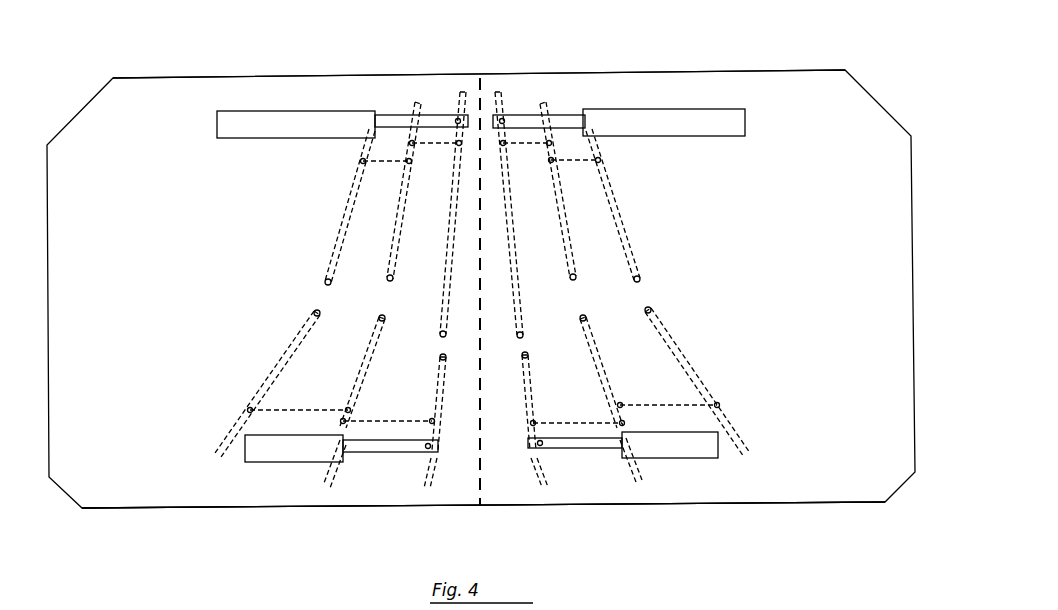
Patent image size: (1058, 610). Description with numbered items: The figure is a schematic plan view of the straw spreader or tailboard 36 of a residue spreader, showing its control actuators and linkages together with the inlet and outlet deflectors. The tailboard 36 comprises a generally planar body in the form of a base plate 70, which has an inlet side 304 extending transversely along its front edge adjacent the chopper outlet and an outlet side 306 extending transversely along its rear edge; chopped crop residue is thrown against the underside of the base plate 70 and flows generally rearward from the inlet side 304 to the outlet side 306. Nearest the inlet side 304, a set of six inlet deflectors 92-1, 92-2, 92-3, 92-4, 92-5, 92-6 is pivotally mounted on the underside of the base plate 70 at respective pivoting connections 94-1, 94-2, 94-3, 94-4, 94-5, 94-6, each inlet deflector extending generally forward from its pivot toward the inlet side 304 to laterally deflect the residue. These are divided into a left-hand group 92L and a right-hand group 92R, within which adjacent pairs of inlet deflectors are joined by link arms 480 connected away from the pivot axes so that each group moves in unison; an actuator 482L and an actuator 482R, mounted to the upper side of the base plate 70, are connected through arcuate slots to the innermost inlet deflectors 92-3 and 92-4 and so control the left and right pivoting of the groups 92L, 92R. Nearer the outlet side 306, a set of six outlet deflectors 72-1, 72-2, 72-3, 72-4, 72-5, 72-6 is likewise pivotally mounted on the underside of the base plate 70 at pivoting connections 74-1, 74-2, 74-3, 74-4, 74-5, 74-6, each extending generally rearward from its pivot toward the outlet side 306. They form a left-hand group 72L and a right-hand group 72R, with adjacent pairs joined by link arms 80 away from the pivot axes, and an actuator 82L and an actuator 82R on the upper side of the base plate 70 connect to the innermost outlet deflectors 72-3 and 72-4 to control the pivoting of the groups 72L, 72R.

The straw spreader or tailboard 36 is at (78, 80).
The base plate 70 is at (146, 510).
The inlet side 304 is at (706, 70).
The outlet side 306 is at (256, 510).
The actuator 482L is at (272, 110).
The actuator 482R is at (747, 118).
The link arm 480 is at (383, 165).
The left-hand group of inlet deflectors 92L is at (264, 192).
The right-hand group of inlet deflectors 92R is at (700, 200).
The inlet deflector 92-1 is at (345, 215).
The inlet deflector 92-2 is at (398, 238).
The inlet deflector 92-3 is at (446, 258).
The inlet deflector 92-4 is at (513, 262).
The inlet deflector 92-5 is at (565, 218).
The inlet deflector 92-6 is at (618, 222).
The pivoting connection 94-1 is at (325, 281).
The pivoting connection 94-2 is at (386, 278).
The pivoting connection 94-3 is at (440, 331).
The pivoting connection 94-4 is at (540, 322).
The pivoting connection 94-5 is at (577, 280).
The pivoting connection 94-6 is at (641, 278).
The left-hand group of outlet deflectors 72L is at (226, 402).
The right-hand group of outlet deflectors 72R is at (755, 390).
The outlet deflector 72-1 is at (280, 353).
The outlet deflector 72-2 is at (366, 372).
The outlet deflector 72-3 is at (432, 393).
The outlet deflector 72-4 is at (535, 378).
The outlet deflector 72-5 is at (605, 372).
The outlet deflector 72-6 is at (700, 380).
The pivoting connection 74-1 is at (312, 312).
The pivoting connection 74-2 is at (377, 320).
The pivoting connection 74-3 is at (440, 355).
The pivoting connection 74-4 is at (529, 355).
The pivoting connection 74-5 is at (587, 318).
The pivoting connection 74-6 is at (652, 310).
The link arm 80 is at (300, 408).
The actuator 82L is at (250, 462).
The actuator 82R is at (705, 460).